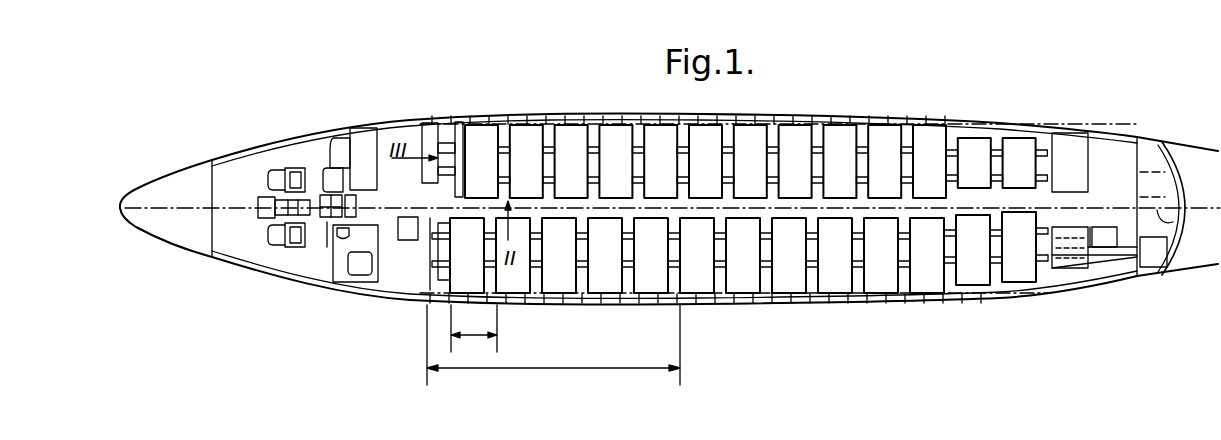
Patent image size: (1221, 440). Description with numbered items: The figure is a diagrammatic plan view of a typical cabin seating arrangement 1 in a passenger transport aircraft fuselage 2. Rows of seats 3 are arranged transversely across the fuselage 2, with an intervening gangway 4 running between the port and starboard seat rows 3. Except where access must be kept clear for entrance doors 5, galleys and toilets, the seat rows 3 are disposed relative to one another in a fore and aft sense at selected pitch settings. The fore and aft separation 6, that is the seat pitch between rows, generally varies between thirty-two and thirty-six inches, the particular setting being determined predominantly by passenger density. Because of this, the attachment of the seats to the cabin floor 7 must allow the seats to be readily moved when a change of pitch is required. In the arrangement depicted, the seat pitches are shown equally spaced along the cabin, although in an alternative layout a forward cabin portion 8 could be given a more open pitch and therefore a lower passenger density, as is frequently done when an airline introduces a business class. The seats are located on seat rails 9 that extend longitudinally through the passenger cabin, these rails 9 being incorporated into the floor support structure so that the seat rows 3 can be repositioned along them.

The cabin seating arrangement 1 is at (617, 153).
The aircraft fuselage 2 is at (362, 121).
The rows of seats 3 is at (567, 143).
The gangway 4 is at (629, 220).
The entrance doors 5 is at (402, 122).
The fore and aft separation 6 is at (474, 328).
The cabin floor 7 is at (740, 207).
The forward cabin portion 8 is at (553, 345).
The seat rails 9 is at (645, 147).